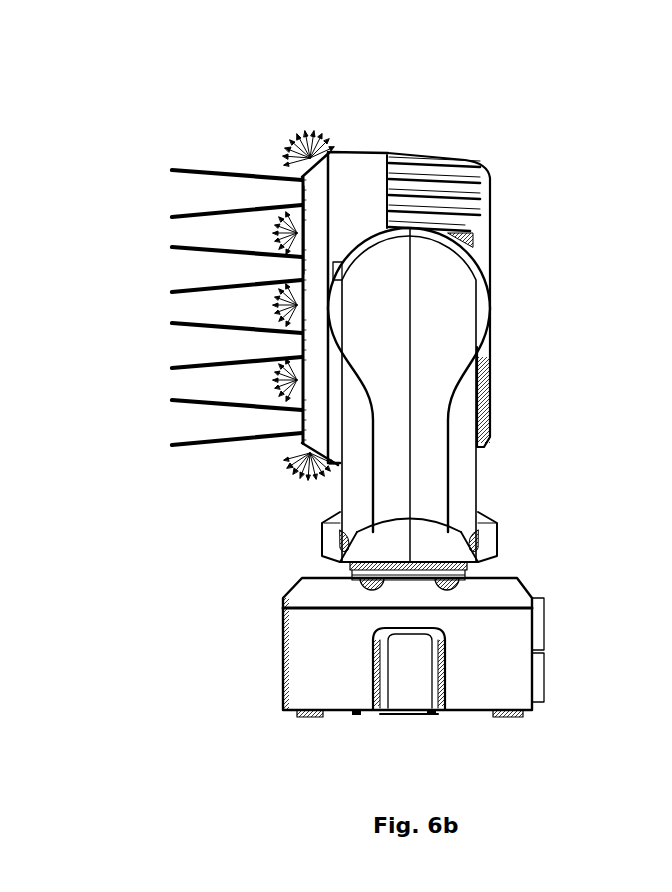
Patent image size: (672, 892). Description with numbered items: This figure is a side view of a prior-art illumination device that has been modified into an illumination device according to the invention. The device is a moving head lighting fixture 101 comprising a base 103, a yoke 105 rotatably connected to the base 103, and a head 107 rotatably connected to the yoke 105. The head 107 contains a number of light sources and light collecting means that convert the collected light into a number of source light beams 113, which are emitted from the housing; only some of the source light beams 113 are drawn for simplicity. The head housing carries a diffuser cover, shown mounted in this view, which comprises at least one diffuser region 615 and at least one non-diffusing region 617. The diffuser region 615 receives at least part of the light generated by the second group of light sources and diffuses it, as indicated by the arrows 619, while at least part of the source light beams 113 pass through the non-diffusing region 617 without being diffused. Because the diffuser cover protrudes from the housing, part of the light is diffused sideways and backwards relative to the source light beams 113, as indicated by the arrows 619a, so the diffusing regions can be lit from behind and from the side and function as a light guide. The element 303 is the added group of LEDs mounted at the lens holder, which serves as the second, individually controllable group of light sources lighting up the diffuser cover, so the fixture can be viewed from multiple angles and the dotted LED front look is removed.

The moving head lighting fixture 101 is at (416, 72).
The base 103 is at (367, 727).
The yoke 105 is at (493, 317).
The head 107 is at (507, 197).
The source light beams 113 is at (220, 308).
The circuit board 303 is at (298, 183).
The diffuser region 615 is at (313, 305).
The non-diffusing region 617 is at (302, 271).
The arrows indicating diffused light 619 is at (297, 380).
The arrows indicating sideways and backwards diffused light 619a is at (328, 133).